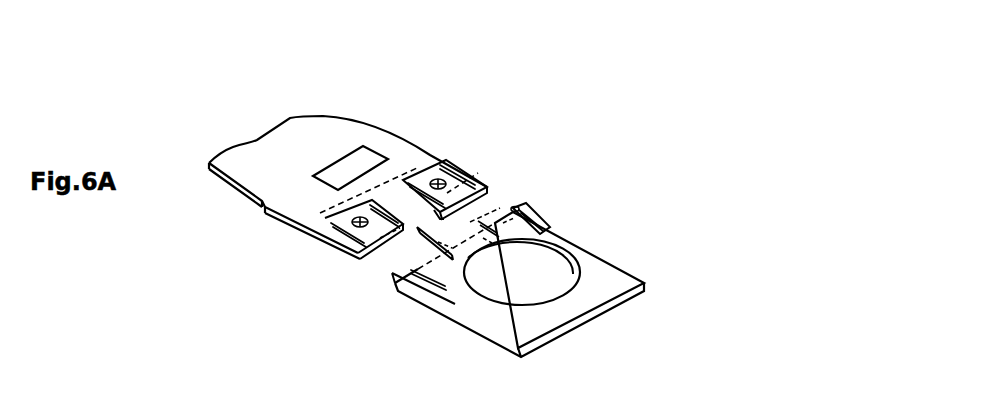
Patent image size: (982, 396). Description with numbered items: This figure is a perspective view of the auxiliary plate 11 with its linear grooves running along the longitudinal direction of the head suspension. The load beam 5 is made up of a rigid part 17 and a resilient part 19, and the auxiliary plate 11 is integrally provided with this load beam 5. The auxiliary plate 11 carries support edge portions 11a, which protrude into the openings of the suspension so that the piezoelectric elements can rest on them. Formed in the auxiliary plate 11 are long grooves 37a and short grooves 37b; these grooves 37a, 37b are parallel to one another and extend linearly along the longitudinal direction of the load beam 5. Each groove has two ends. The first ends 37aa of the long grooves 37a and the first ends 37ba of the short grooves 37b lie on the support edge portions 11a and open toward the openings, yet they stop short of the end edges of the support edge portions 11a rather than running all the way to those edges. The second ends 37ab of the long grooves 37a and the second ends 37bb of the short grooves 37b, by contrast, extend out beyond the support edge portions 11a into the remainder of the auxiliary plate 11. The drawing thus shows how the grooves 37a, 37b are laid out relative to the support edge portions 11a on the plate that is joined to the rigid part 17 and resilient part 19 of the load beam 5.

The load beam 5 is at (313, 117).
The auxiliary plate 11 is at (603, 258).
The support edge portions 11a is at (478, 212).
The rigid part 17 is at (248, 156).
The resilient part 19 is at (384, 143).
The long grooves 37a is at (418, 186).
The first ends of the long grooves 37aa is at (366, 248).
The second ends of the long grooves 37ab is at (430, 186).
The short grooves 37b is at (649, 286).
The first ends of the short grooves 37ba is at (502, 208).
The second ends of the short grooves 37bb is at (533, 318).